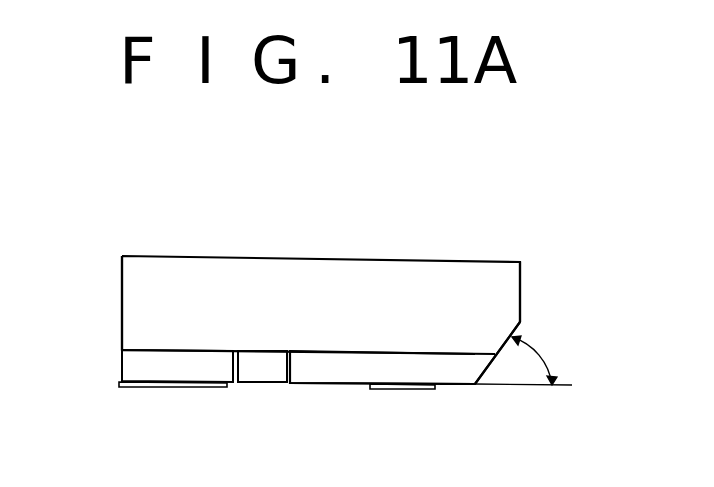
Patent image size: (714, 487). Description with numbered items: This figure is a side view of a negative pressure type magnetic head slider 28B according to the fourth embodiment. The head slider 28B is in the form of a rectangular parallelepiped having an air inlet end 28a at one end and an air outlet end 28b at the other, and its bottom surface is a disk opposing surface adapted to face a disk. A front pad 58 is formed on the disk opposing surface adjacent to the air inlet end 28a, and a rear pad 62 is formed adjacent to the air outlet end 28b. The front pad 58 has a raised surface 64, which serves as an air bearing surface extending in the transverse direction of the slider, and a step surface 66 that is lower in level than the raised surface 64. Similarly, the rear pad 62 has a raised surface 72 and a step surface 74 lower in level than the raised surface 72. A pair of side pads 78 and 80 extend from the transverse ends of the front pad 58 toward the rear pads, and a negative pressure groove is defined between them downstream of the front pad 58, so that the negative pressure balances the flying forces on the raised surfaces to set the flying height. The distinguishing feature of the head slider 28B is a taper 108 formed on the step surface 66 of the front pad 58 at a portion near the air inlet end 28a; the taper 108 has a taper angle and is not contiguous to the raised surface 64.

The negative pressure type magnetic head slider 28B is at (420, 260).
The air inlet end 28a is at (522, 295).
The air outlet end 28b is at (121, 307).
The raised surface 72 is at (160, 390).
The step surface 74 is at (232, 385).
The side pad 78 is at (263, 385).
The side pad 80 is at (330, 386).
The rear pad 62 is at (120, 370).
The raised surface 64 is at (402, 392).
The step surface 66 is at (452, 390).
The front pad 58 is at (478, 385).
The taper 108 is at (493, 373).